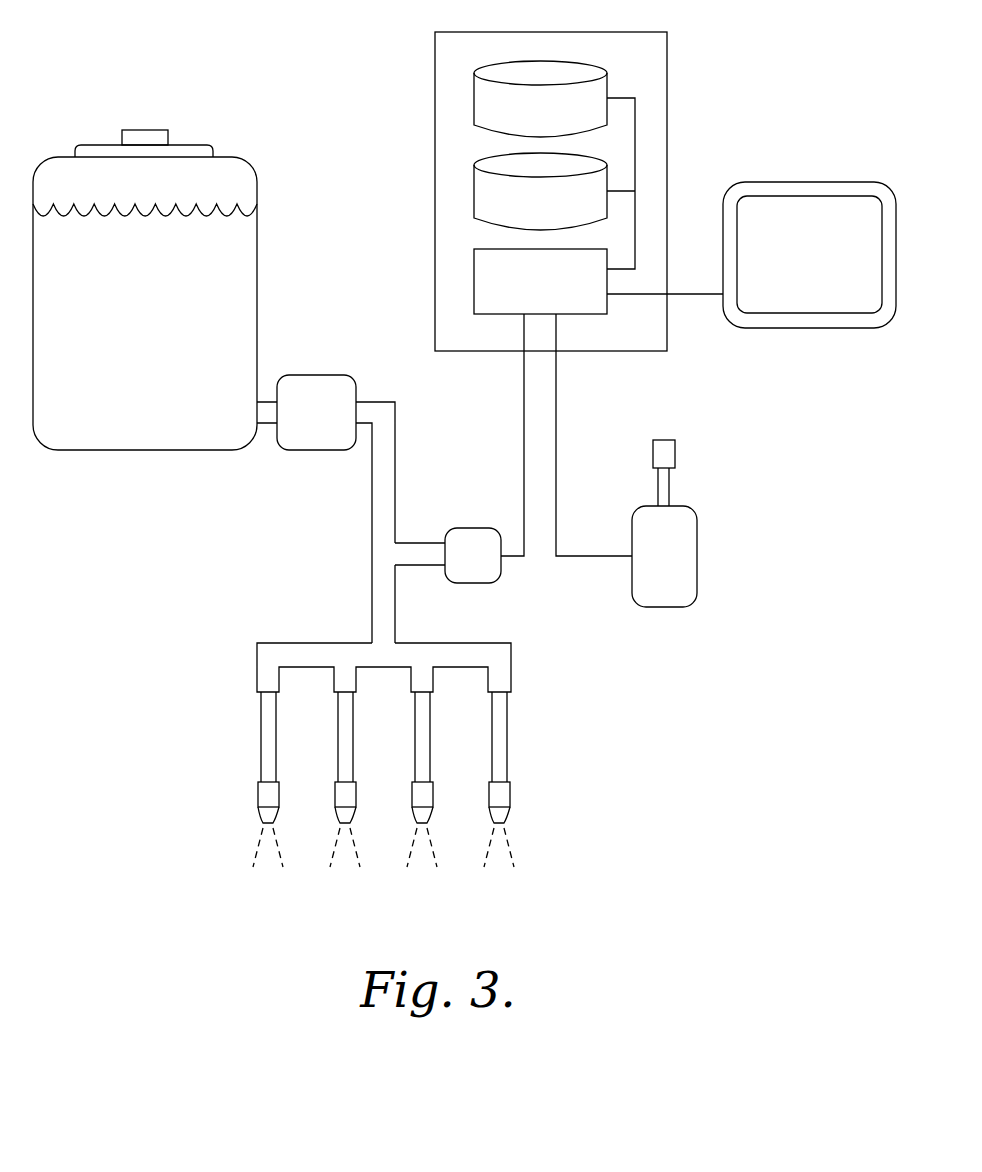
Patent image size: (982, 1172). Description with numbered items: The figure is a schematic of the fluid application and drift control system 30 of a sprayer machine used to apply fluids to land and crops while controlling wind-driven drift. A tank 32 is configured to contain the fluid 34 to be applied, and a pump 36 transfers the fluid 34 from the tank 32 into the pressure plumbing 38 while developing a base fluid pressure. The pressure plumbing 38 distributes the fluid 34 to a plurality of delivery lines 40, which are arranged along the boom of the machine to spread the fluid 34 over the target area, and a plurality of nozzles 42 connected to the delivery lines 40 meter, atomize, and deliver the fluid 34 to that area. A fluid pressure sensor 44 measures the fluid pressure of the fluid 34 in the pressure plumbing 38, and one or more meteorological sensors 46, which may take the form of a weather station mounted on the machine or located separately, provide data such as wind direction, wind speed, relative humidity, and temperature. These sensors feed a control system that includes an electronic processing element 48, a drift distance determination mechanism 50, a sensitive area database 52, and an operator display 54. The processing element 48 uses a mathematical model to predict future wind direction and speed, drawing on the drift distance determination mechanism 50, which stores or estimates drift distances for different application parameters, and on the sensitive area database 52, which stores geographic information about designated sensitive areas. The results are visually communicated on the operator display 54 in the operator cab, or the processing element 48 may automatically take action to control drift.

The system 30 is at (630, 177).
The tank 32 is at (238, 165).
The fluid 34 is at (162, 295).
The pump 36 is at (295, 438).
The pressure plumbing 38 is at (378, 522).
The delivery lines 40 is at (240, 715).
The nozzles 42 is at (240, 804).
The fluid pressure sensor 44 is at (482, 577).
The meteorological sensors 46 is at (715, 569).
The electronic processing element 48 is at (578, 280).
The drift distance determination mechanism 50 is at (578, 105).
The sensitive area database 52 is at (578, 198).
The operator display 54 is at (793, 295).